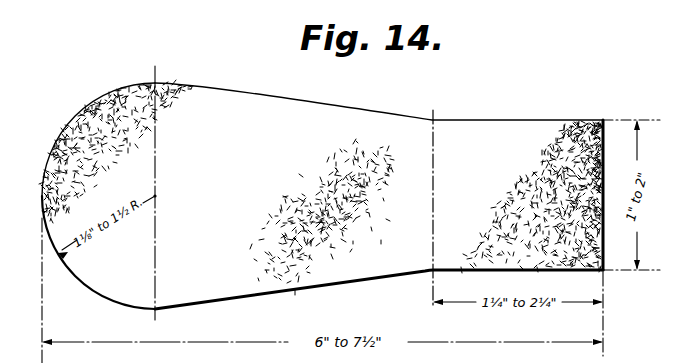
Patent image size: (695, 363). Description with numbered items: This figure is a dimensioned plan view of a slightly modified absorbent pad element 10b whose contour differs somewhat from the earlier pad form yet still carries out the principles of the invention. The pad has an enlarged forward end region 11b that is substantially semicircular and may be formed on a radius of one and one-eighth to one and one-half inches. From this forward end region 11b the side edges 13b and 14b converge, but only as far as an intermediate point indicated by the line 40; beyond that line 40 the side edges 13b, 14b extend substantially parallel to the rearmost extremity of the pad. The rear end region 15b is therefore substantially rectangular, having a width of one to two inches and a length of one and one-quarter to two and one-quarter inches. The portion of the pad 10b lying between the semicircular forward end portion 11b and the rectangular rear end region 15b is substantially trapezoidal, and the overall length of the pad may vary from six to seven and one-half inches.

The absorbent pad element 10b is at (398, 127).
The enlarged forward end region 11b is at (88, 106).
The side edge 13b is at (222, 89).
The side edge 14b is at (352, 286).
The rear end region 15b is at (552, 127).
The line 40 is at (434, 161).